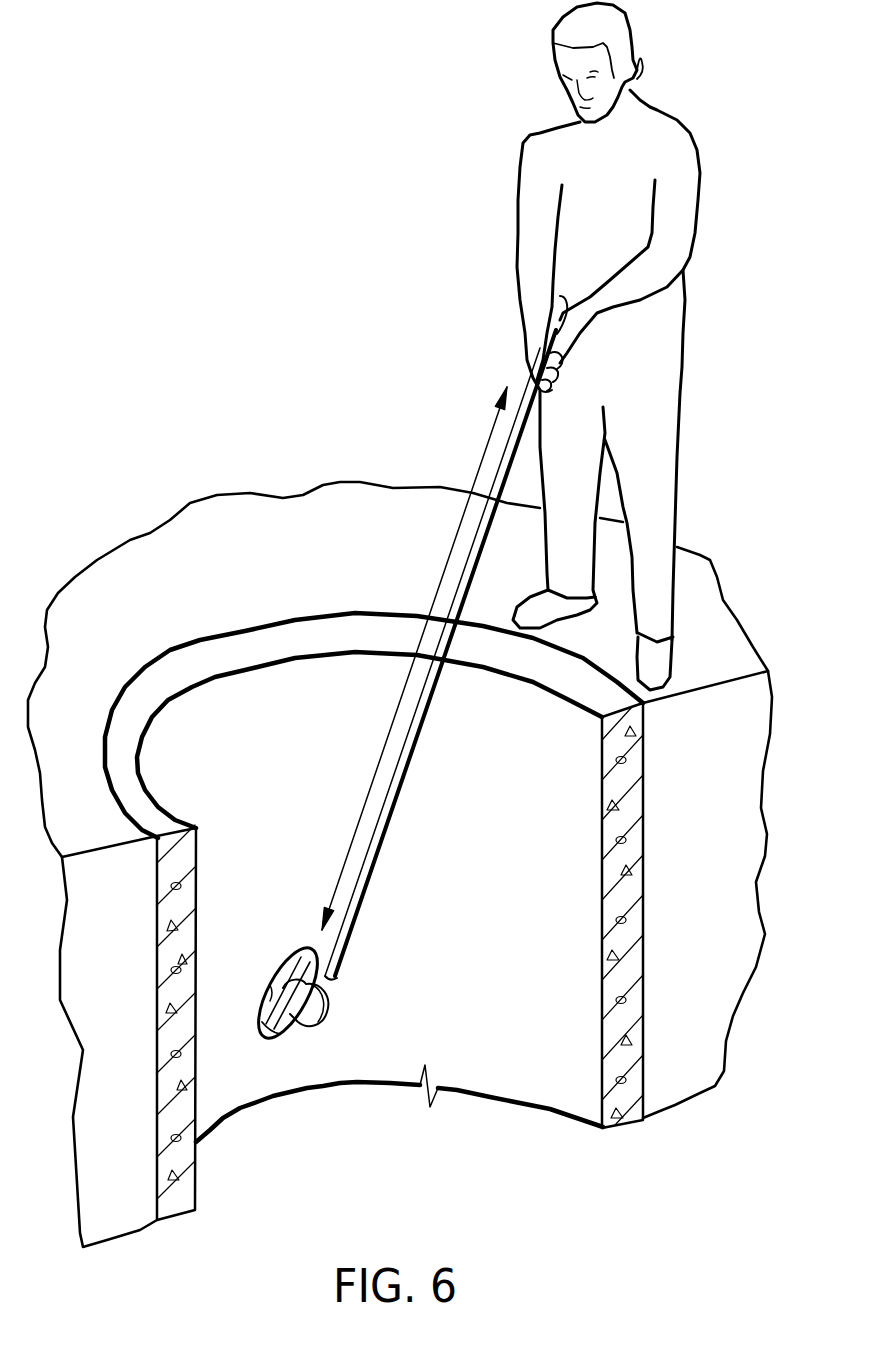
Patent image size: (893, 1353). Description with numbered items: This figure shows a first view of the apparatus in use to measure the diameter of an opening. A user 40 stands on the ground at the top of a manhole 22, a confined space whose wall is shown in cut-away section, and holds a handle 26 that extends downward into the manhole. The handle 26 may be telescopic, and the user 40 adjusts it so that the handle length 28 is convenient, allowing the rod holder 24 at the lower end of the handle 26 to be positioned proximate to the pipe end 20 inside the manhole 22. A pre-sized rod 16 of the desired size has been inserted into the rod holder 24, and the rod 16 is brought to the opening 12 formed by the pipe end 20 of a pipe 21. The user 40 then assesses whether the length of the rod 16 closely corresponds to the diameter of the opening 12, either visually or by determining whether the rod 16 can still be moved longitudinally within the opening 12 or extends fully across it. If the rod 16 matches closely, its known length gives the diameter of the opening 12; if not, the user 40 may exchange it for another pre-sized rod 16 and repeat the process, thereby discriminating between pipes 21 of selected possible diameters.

The user 40 is at (527, 150).
The handle 26 is at (420, 735).
The handle length 28 is at (397, 700).
The opening 12 is at (275, 967).
The rod 16 is at (300, 957).
The pipe 21 is at (272, 997).
The rod holder 24 is at (300, 1005).
The pipe end 20 is at (278, 1033).
The manhole 22 is at (508, 1072).